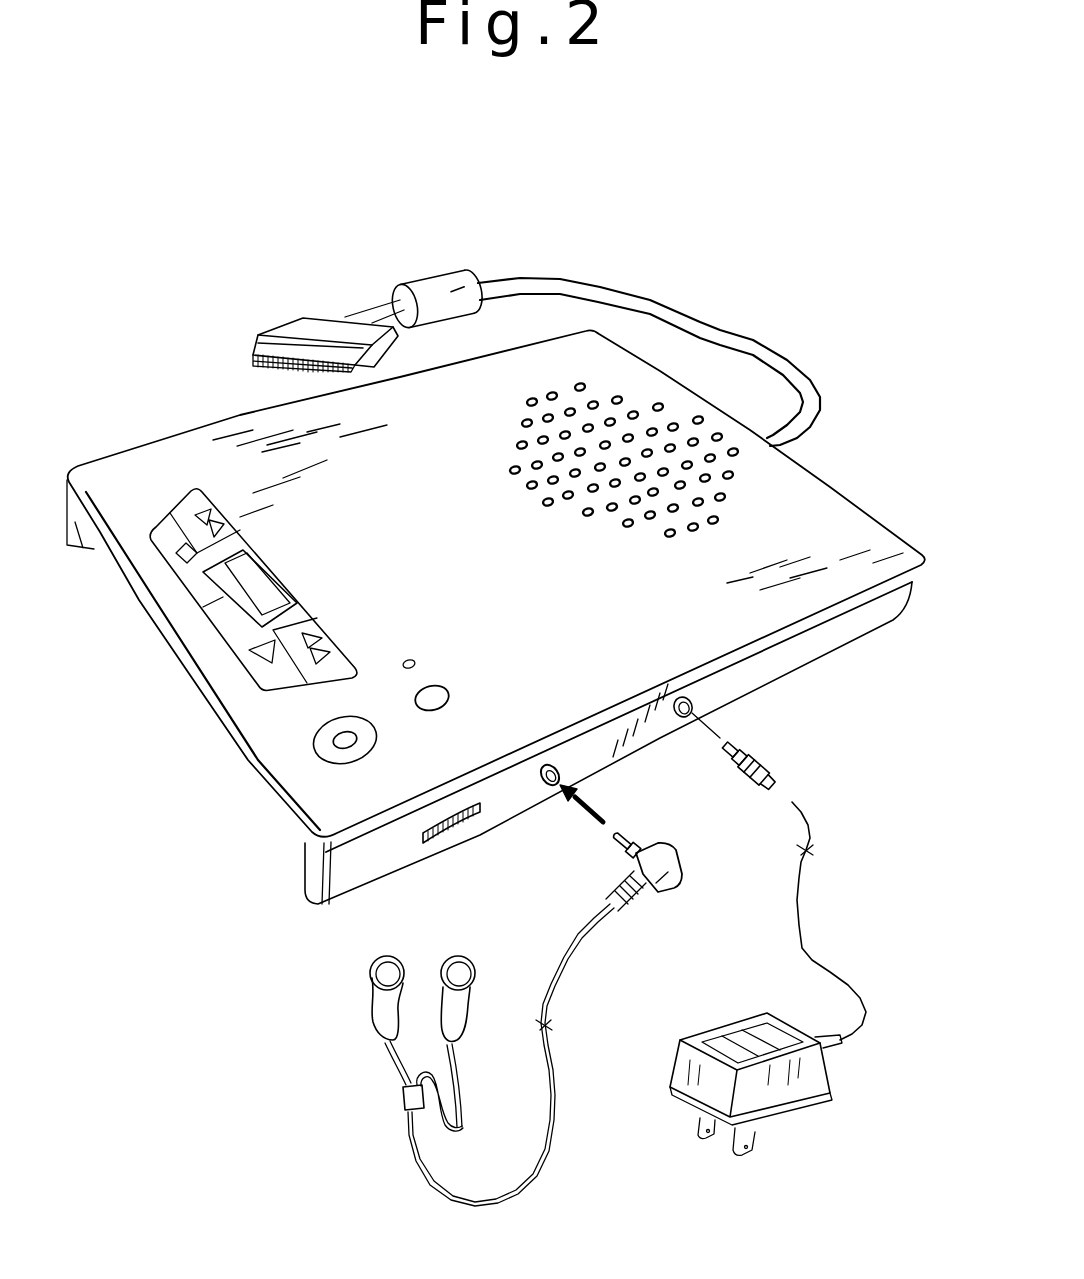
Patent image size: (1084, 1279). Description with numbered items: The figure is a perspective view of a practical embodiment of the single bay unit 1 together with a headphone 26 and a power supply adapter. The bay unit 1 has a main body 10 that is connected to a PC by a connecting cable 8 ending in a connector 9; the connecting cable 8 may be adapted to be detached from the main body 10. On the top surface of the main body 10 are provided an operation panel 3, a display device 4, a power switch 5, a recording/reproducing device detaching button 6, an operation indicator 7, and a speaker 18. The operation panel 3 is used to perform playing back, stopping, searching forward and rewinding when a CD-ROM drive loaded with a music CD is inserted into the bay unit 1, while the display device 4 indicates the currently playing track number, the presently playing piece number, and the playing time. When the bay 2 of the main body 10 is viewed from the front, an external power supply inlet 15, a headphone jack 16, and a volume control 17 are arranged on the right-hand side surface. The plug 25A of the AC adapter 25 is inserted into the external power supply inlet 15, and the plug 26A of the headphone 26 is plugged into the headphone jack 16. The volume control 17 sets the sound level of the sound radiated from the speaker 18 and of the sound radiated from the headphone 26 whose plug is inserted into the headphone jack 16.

The bay unit 1 is at (738, 216).
The bay 2 is at (208, 732).
The operation panel 3 is at (337, 660).
The display device 4 is at (262, 585).
The power switch 5 is at (378, 741).
The recording/reproducing device detaching button 6 is at (450, 694).
The operation indicator 7 is at (417, 665).
The connecting cable 8 is at (687, 313).
The connector 9 is at (322, 325).
The main body 10 is at (824, 526).
The external power supply inlet 15 is at (697, 703).
The headphone jack 16 is at (560, 777).
The volume control 17 is at (463, 830).
The speaker 18 is at (637, 505).
The AC adapter 25 is at (680, 1067).
The plug of AC adapter 25A is at (740, 747).
The headphone 26 is at (370, 1020).
The plug of headphone 26A is at (640, 843).